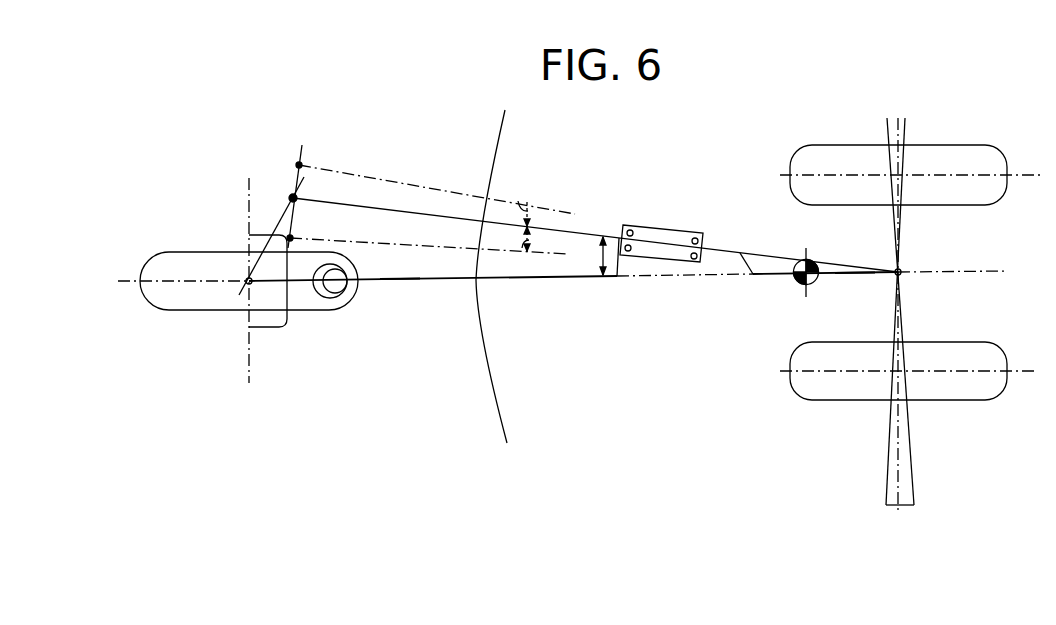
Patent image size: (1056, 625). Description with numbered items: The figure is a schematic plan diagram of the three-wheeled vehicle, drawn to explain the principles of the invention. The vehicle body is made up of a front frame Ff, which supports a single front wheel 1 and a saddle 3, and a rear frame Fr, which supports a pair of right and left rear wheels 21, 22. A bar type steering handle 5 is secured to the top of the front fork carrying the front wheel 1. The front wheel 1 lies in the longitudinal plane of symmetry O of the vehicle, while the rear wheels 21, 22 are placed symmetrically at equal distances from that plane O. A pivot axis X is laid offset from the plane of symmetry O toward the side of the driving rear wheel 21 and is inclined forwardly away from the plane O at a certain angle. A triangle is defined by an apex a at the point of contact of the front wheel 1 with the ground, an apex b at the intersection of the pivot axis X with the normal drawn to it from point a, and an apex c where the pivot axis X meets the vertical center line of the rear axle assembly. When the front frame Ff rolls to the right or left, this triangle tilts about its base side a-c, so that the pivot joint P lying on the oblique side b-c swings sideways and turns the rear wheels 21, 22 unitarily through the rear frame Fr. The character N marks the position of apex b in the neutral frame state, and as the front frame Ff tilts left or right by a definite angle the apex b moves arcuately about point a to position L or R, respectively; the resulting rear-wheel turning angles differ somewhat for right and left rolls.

The front wheel 1 is at (182, 262).
The saddle 3 is at (797, 285).
The steering handle 5 is at (491, 373).
The right rear wheel 21 is at (968, 160).
The left rear wheel 22 is at (967, 355).
The pivot joint P is at (676, 226).
The pivot axis X is at (586, 234).
The longitudinal plane of symmetry O is at (975, 271).
The point of ground contact of the front wheel a is at (247, 278).
The apex point b is at (290, 196).
The apex point c is at (902, 314).
The position R is at (303, 196).
The neutral position N is at (595, 225).
The position L is at (427, 235).
The front frame Ff is at (395, 278).
The rear frame Fr is at (855, 277).